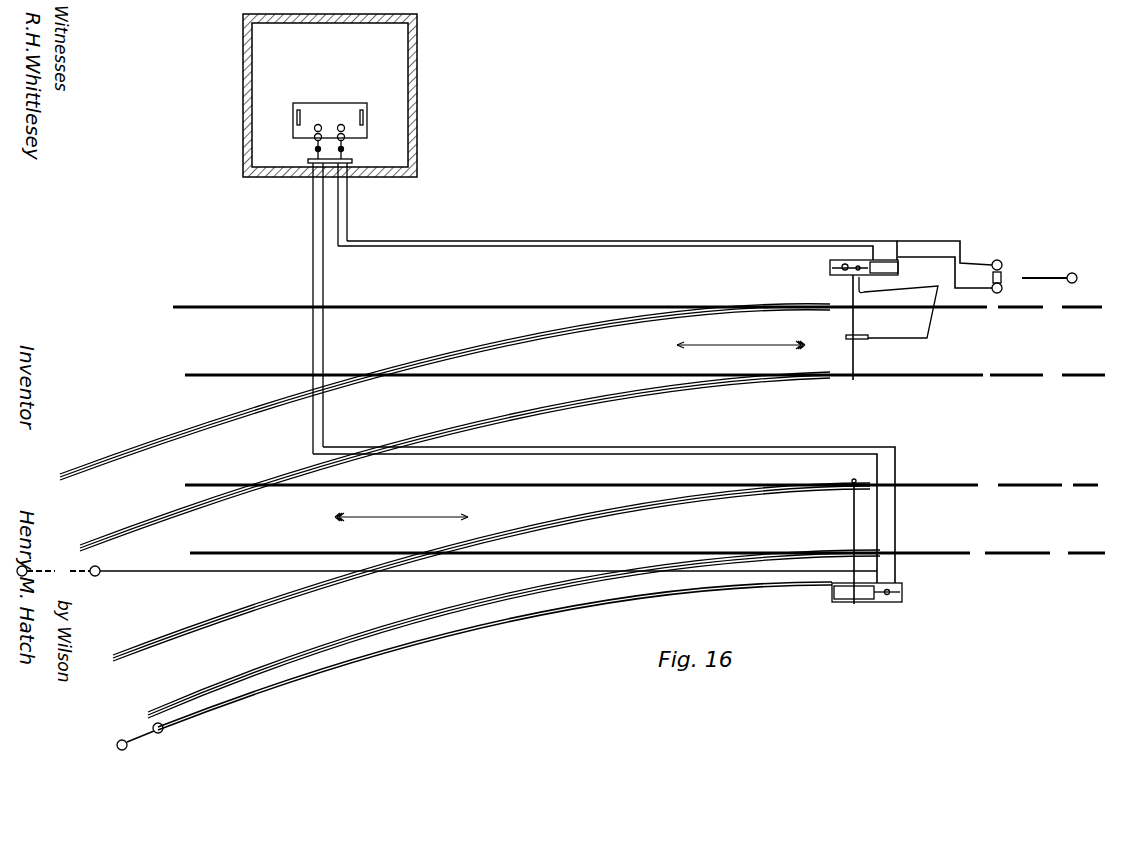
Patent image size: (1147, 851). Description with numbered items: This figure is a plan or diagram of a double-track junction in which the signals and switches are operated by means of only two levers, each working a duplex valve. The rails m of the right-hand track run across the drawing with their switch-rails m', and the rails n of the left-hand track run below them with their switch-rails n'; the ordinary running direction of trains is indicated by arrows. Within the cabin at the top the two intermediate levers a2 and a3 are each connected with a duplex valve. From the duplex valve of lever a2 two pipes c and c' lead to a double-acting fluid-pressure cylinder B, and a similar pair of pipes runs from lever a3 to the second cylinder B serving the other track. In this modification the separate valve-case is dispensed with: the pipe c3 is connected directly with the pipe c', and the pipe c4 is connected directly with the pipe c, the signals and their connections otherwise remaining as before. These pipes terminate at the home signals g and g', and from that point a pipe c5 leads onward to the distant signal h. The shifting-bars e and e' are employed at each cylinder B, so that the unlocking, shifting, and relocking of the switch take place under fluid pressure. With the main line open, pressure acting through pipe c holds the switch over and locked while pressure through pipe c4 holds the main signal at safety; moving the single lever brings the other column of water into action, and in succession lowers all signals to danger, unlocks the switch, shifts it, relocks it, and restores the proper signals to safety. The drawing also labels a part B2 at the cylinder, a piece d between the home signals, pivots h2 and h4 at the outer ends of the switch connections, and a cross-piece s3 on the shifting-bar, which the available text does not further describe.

The intermediate lever with duplex valve a2 is at (344, 167).
The intermediate lever with duplex valve a3 is at (314, 271).
The double-acting fluid-pressure cylinder B is at (866, 421).
The motor device part B2 is at (868, 259).
The pipe c is at (610, 404).
The pipe c' is at (595, 414).
The pipe c3 is at (575, 491).
The pipe c4 is at (546, 398).
The pipe c5 is at (1044, 269).
The coupling d is at (991, 278).
The shifting-bar e is at (848, 439).
The shifting-bar e' is at (898, 307).
The home signal g is at (550, 422).
The home signal g' is at (584, 515).
The distant signal h is at (1071, 266).
The pivot h2 is at (53, 579).
The pivot h4 is at (135, 744).
The rails of the right-hand track m is at (639, 341).
The switch-rails m' is at (445, 427).
The rails of the left-hand track n is at (645, 519).
The switch-rails n' is at (496, 600).
The cross bar s3 is at (857, 330).